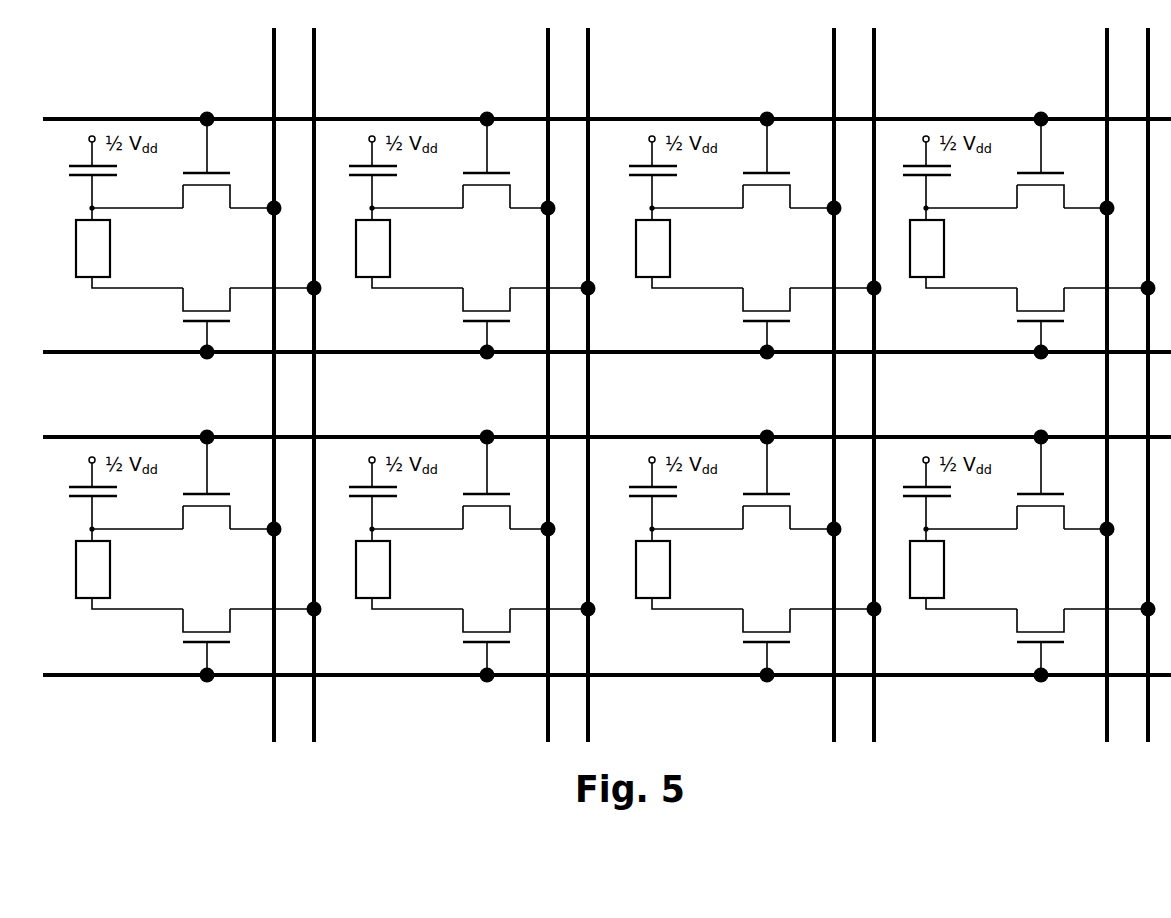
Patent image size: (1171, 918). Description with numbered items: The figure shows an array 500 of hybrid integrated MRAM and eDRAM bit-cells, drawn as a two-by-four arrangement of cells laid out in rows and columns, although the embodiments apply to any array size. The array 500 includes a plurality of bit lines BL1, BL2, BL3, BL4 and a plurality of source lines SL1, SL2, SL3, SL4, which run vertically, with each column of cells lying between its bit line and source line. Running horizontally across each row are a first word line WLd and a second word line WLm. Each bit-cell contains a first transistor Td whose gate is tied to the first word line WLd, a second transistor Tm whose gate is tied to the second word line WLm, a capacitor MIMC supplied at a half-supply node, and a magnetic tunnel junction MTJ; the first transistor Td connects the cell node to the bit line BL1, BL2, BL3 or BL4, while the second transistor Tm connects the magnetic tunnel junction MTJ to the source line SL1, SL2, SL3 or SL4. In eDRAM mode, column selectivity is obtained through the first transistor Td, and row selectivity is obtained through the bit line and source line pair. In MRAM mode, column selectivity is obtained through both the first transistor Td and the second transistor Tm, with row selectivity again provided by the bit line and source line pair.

The array 500 is at (80, 42).
The first word line WLd is at (607, 265).
The second word line WLm is at (607, 499).
The bit line BL1 is at (260, 373).
The source line SL1 is at (315, 373).
The bit line BL2 is at (544, 373).
The source line SL2 is at (598, 373).
The bit line BL3 is at (834, 373).
The source line SL3 is at (888, 373).
The bit line BL4 is at (1093, 373).
The source line SL4 is at (1149, 373).
The MIM capacitor MIMC is at (531, 336).
The first transistor Td is at (623, 328).
The magnetic tunnel junction MTJ is at (546, 414).
The second transistor Tm is at (623, 479).